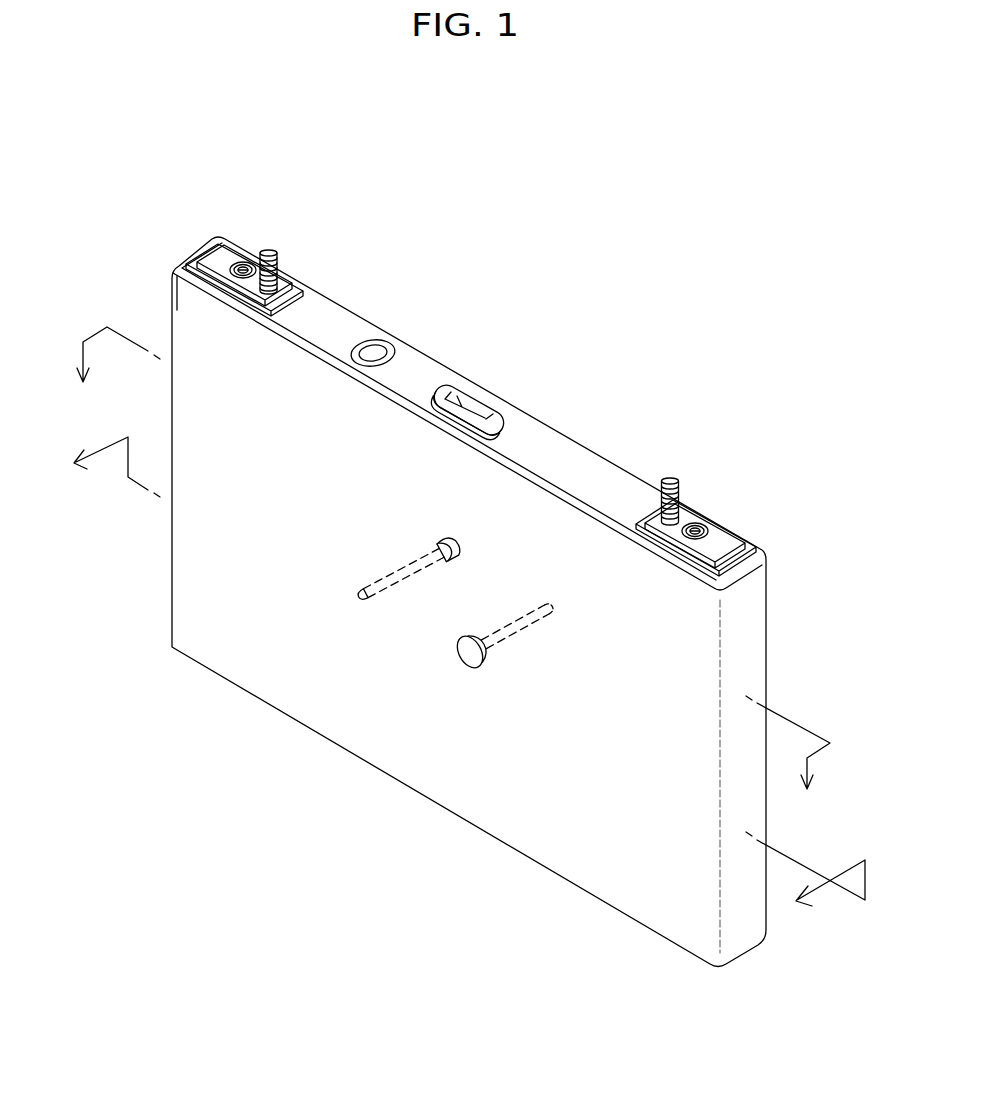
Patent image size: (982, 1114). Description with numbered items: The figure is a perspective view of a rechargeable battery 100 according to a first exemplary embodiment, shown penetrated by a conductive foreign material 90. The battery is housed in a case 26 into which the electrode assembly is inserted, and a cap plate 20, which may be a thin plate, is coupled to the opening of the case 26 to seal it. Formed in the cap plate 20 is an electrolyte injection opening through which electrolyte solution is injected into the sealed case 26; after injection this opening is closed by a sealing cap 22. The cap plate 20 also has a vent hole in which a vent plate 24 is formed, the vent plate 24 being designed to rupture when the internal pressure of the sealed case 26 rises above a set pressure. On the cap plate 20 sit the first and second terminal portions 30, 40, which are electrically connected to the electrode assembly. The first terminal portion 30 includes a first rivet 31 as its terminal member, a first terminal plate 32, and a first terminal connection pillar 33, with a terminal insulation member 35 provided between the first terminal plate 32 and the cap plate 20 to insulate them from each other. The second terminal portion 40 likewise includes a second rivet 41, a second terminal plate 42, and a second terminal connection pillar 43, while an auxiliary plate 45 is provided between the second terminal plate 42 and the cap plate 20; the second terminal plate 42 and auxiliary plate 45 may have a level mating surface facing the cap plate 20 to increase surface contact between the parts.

The rechargeable battery 100 is at (482, 171).
The cap plate 20 is at (586, 463).
The sealing cap 22 is at (375, 350).
The vent plate 24 is at (473, 407).
The case 26 is at (498, 803).
The first terminal portion 30 is at (274, 227).
The first rivet 31 is at (242, 266).
The first terminal plate 32 is at (213, 257).
The first terminal connection pillar 33 is at (290, 240).
The terminal insulation member 35 is at (299, 289).
The second terminal portion 40 is at (723, 484).
The second rivet 41 is at (695, 530).
The second terminal plate 42 is at (720, 545).
The second terminal connection pillar 43 is at (680, 463).
The auxiliary plate 45 is at (748, 553).
The conductive foreign material 90 is at (458, 545).